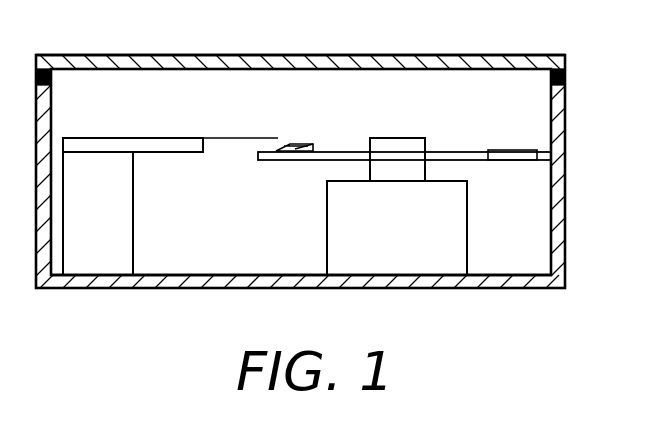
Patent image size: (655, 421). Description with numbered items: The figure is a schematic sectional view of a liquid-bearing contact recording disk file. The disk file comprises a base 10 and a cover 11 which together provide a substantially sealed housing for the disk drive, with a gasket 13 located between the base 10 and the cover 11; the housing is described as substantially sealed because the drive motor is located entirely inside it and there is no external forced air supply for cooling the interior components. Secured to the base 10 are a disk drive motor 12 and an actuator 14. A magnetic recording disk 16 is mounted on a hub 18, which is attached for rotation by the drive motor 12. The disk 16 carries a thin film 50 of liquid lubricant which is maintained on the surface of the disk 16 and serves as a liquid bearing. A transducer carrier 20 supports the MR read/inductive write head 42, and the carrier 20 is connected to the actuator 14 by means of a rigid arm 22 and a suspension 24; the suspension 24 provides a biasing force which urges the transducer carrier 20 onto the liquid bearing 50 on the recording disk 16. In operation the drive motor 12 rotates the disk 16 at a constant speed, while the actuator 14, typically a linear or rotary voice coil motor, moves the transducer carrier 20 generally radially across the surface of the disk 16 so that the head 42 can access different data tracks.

The base 10 is at (555, 200).
The cover 11 is at (58, 53).
The disk drive motor 12 is at (410, 265).
The gasket 13 is at (565, 73).
The actuator 14 is at (108, 268).
The magnetic recording disk 16 is at (568, 154).
The hub 18 is at (397, 138).
The transducer carrier 20 is at (308, 143).
The rigid arm 22 is at (135, 138).
The suspension 24 is at (238, 138).
The MR read/inductive write head 42 is at (278, 143).
The thin film of liquid lubricant 50 is at (507, 150).